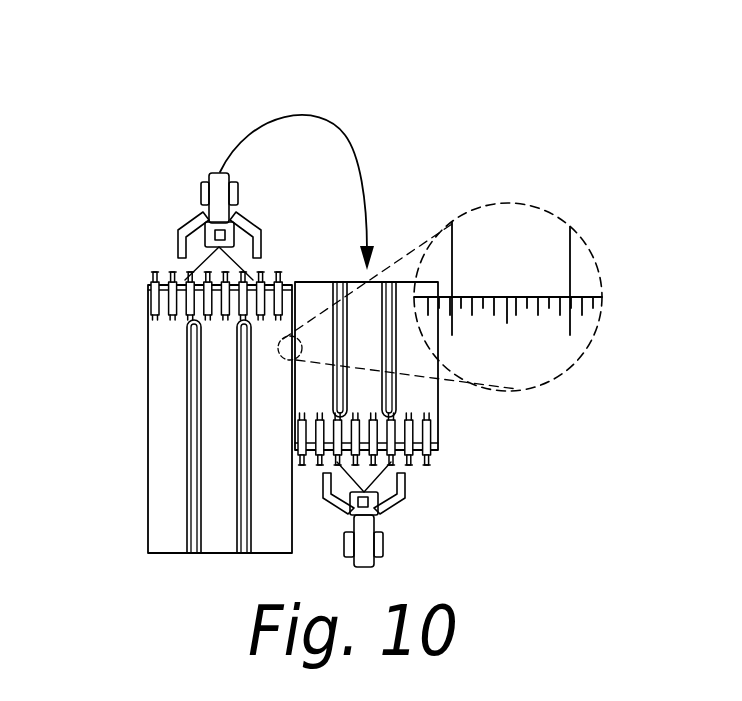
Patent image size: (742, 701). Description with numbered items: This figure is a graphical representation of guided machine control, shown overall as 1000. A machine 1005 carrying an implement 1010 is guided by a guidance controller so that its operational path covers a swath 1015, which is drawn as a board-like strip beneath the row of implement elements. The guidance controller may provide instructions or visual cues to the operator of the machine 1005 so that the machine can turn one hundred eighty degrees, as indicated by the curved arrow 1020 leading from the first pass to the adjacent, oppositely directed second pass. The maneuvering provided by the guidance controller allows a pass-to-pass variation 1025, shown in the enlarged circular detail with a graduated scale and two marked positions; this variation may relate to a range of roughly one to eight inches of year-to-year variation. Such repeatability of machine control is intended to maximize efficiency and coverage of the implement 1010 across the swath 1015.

The connector insertion system 1000 is at (150, 105).
The machine 1005 is at (199, 189).
The implement 1010 is at (147, 288).
The swath 1015 is at (163, 451).
The turn of 180 degrees 1020 is at (447, 158).
The pass-to-pass variation 1025 is at (533, 227).